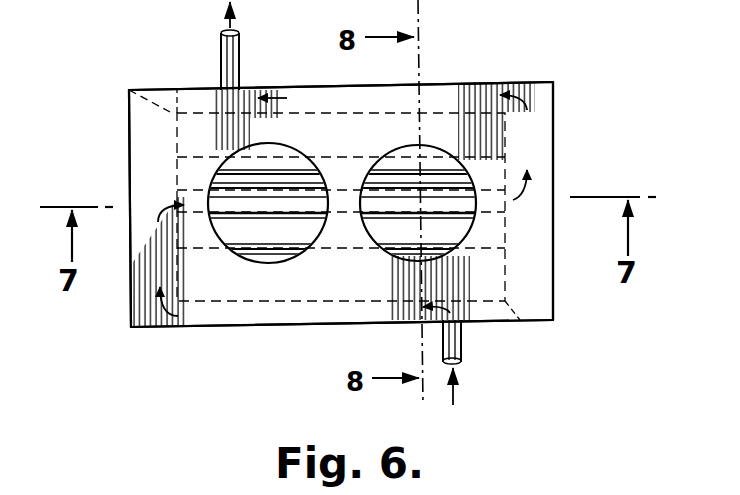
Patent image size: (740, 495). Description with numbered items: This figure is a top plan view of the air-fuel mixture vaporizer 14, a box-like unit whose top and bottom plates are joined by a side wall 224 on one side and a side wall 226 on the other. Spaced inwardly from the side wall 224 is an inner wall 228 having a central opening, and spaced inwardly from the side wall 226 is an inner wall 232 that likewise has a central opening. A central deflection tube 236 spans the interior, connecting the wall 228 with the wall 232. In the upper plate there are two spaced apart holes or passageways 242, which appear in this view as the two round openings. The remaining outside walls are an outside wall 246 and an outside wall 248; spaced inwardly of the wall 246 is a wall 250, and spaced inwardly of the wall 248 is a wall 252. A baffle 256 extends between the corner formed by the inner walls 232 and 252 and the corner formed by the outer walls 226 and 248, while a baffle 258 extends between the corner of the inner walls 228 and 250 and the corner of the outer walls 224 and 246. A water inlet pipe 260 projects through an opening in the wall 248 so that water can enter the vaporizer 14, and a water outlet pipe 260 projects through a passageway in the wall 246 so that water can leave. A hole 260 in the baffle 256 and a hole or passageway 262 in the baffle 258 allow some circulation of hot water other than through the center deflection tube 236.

The vaporizer 14 is at (555, 80).
The side wall 224 is at (128, 175).
The side wall 226 is at (555, 134).
The wall 228 is at (142, 287).
The wall 232 is at (538, 246).
The central deflection tube 236 is at (300, 185).
The holes or passageways 242 is at (282, 259).
The outside wall 246 is at (514, 62).
The outside wall 248 is at (245, 330).
The wall 250 is at (352, 108).
The wall 252 is at (277, 303).
The baffle 256 is at (532, 322).
The baffle 258 is at (128, 111).
The water inlet pipe 260 is at (222, 42).
The hole or passageway 262 is at (168, 108).